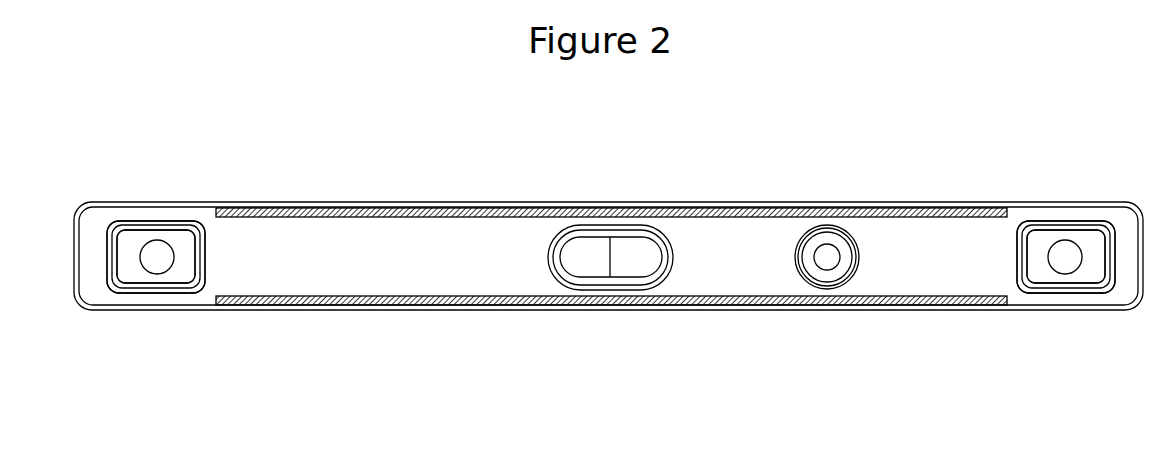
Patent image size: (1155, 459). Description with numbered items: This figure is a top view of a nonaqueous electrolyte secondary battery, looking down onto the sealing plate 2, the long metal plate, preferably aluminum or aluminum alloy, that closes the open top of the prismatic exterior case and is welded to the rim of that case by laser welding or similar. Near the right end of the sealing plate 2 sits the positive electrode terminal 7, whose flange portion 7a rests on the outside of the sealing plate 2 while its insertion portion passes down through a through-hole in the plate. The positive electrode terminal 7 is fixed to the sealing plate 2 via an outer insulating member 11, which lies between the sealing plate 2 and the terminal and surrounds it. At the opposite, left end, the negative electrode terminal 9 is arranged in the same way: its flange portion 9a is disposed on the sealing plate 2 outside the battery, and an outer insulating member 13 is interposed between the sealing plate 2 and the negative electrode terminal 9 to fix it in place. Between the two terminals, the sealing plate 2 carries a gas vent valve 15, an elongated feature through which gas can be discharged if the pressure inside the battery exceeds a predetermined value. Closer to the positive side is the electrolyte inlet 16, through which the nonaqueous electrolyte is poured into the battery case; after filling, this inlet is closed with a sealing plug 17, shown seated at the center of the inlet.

The sealing plate 2 is at (732, 270).
The positive electrode terminal 7 is at (1065, 272).
The flange portion 7a is at (1095, 243).
The negative electrode terminal 9 is at (156, 270).
The flange portion 9a is at (132, 245).
The outer insulating member 11 is at (1067, 227).
The outer insulating member 13 is at (168, 227).
The gas vent valve 15 is at (590, 262).
The electrolyte inlet 16 is at (830, 270).
The sealing plug 17 is at (827, 253).